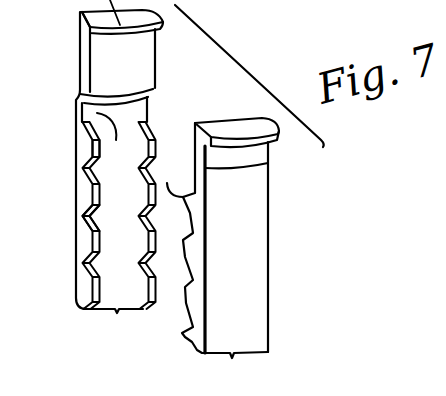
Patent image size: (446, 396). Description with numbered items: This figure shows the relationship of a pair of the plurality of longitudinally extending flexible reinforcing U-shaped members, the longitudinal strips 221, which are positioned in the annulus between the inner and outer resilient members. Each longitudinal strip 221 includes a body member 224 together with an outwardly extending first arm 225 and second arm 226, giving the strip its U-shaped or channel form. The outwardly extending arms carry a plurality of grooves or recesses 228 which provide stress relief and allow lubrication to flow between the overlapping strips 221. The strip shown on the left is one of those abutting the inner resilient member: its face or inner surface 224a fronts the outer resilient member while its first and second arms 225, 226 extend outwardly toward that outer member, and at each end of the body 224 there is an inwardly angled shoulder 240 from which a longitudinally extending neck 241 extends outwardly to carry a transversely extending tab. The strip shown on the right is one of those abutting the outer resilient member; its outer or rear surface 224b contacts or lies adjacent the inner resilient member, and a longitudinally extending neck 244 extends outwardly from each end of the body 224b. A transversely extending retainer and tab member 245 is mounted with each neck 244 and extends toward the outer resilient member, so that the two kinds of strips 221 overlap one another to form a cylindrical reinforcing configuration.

The longitudinal strip 221 is at (138, 58).
The neck 241 is at (80, 43).
The shoulder 240 is at (78, 90).
The face or inner surface 224a is at (97, 115).
The body member 224 is at (117, 196).
The second arm 226 is at (90, 152).
The groove or recess 228 is at (85, 218).
The first arm 225 is at (156, 147).
The retainer and tab member 245 is at (238, 133).
The neck 244 is at (268, 163).
The outer or rear surface 224b is at (235, 240).